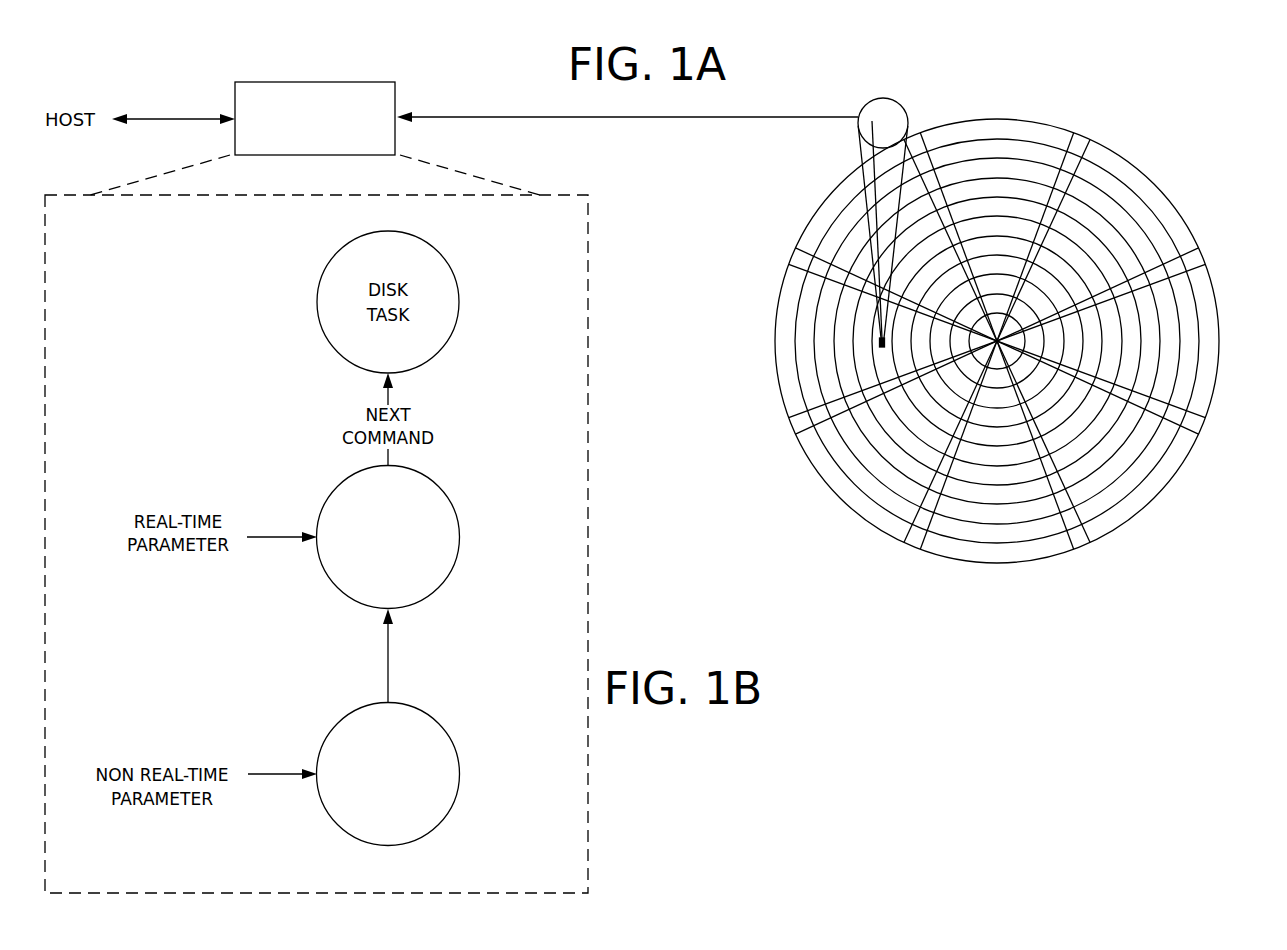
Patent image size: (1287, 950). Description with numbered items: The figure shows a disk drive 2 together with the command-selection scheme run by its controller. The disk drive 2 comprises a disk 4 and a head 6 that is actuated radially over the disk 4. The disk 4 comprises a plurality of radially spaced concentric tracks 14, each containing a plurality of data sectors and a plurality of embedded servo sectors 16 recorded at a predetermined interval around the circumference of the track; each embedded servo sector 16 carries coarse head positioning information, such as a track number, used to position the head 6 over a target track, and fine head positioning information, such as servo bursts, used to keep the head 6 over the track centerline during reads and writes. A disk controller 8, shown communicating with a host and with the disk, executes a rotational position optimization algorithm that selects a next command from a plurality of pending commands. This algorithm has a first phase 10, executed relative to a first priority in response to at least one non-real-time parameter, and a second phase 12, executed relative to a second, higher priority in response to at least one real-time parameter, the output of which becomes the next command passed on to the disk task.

In FIG. 1A, the disk drive 2 is at (1042, 58).
In FIG. 1A, the disk 4 is at (1135, 146).
In FIG. 1A, the head 6 is at (878, 362).
In FIG. 1B, the disk controller 8 is at (315, 82).
In FIG. 1B, the first phase 10 is at (460, 775).
In FIG. 1B, the second phase 12 is at (460, 536).
In FIG. 1A, the tracks 14 is at (1000, 147).
In FIG. 1A, the embedded servo sectors 16 is at (916, 137).